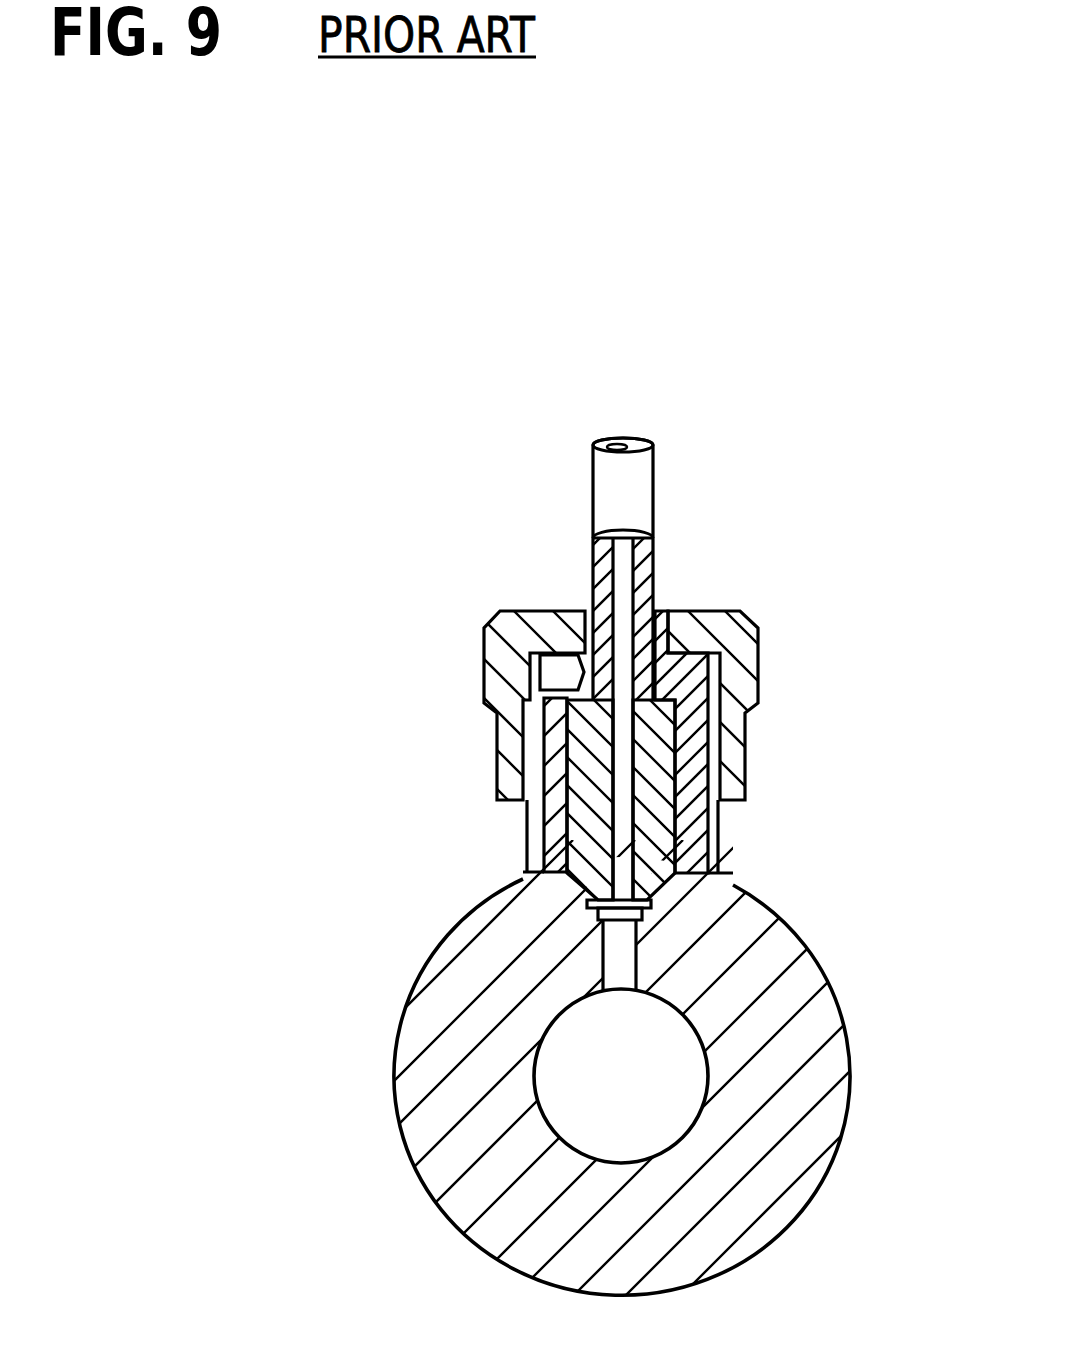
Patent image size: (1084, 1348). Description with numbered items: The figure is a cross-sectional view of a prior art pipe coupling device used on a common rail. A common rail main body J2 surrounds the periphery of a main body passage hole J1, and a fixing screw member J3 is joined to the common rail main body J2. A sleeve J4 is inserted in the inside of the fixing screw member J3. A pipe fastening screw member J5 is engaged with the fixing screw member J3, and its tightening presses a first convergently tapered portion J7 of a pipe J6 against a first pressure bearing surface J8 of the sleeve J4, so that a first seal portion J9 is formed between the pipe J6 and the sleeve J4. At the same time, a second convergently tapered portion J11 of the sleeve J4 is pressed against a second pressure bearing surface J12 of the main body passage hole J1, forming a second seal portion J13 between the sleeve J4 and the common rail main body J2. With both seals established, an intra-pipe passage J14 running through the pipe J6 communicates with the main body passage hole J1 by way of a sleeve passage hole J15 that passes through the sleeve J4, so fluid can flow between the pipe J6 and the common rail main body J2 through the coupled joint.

The main body passage hole J1 is at (626, 946).
The common rail main body J2 is at (825, 1060).
The fixing screw member J3 is at (690, 817).
The sleeve J4 is at (668, 733).
The pipe fastening screw member J5 is at (733, 658).
The pipe J6 is at (632, 486).
The first convergently tapered portion J7 is at (545, 690).
The first pressure bearing surface J8 is at (565, 730).
The first seal portion J9 is at (382, 665).
The second convergently tapered portion J11 is at (600, 900).
The second pressure bearing surface J12 is at (600, 915).
The second seal portion J13 is at (308, 873).
The intra-pipe passage J14 is at (622, 565).
The sleeve passage hole J15 is at (620, 833).